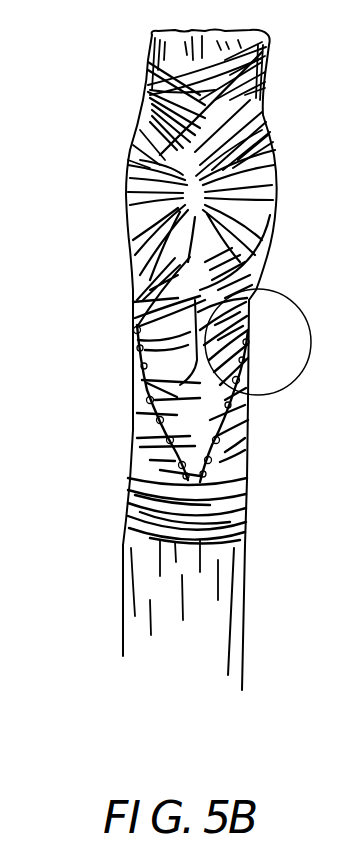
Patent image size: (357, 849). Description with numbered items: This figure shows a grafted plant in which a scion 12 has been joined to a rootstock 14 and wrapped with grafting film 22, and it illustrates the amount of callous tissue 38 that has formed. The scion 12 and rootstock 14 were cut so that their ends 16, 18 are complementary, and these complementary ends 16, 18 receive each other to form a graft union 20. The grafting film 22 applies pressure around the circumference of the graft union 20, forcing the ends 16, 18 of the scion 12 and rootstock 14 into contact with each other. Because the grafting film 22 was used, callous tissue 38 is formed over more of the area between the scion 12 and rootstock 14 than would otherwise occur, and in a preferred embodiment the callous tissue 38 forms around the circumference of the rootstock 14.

The scion 12 is at (147, 102).
The graft union 20 is at (60, 266).
The end of the scion 16 is at (132, 363).
The end of the rootstock 18 is at (133, 380).
The callous tissue 38 is at (257, 343).
The grafting film 22 is at (124, 468).
The rootstock 14 is at (122, 580).